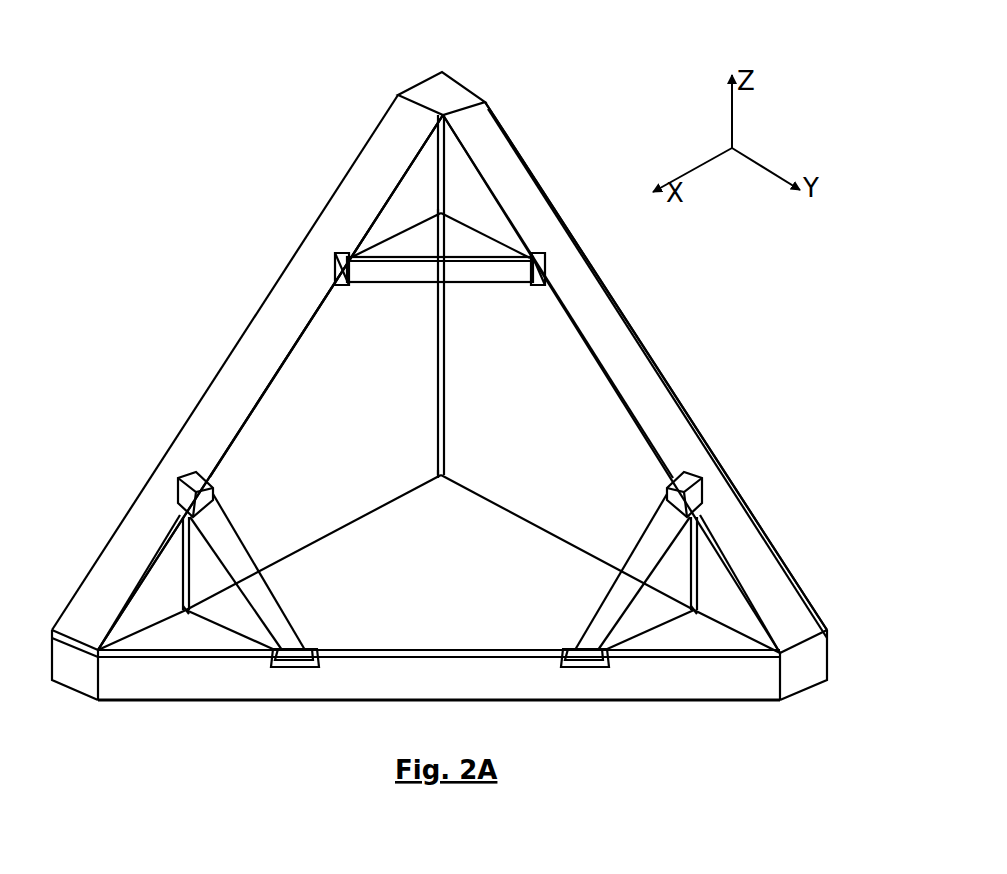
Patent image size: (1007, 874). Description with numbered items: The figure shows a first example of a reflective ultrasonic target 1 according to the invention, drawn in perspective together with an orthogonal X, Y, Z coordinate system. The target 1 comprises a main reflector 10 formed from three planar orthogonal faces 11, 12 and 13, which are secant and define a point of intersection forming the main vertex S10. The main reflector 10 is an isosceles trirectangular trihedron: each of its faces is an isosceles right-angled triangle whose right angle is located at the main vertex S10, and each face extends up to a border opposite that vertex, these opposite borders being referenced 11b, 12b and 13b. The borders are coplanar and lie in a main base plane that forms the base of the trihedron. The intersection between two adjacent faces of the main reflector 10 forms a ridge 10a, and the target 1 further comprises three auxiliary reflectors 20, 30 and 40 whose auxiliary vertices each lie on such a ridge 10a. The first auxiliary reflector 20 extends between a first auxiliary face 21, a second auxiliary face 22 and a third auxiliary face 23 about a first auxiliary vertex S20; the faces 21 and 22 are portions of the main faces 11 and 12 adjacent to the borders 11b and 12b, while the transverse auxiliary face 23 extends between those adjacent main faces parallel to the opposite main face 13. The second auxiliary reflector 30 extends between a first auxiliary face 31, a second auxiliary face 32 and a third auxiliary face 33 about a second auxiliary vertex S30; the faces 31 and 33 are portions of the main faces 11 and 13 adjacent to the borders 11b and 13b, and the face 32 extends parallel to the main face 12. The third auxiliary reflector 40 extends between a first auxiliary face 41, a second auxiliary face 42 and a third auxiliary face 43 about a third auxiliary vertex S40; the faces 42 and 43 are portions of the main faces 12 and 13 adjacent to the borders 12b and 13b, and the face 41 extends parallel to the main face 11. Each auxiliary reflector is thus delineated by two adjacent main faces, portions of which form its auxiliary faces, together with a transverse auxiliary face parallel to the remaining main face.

The reflective ultrasonic target 1 is at (156, 100).
The main reflector 10 is at (285, 202).
The ridge 10a is at (447, 385).
The planar orthogonal face 11 is at (308, 358).
The border 11b is at (252, 392).
The planar orthogonal face 12 is at (613, 378).
The border 12b is at (667, 362).
The planar orthogonal face 13 is at (475, 612).
The border 13b is at (378, 660).
The first auxiliary reflector 20 is at (430, 160).
The first auxiliary face 21 is at (415, 183).
The second auxiliary face 22 is at (467, 183).
The third auxiliary face 23 is at (462, 243).
The second auxiliary reflector 30 is at (153, 640).
The first auxiliary face 31 is at (160, 578).
The second auxiliary face 32 is at (220, 605).
The third auxiliary face 33 is at (193, 635).
The third auxiliary reflector 40 is at (658, 632).
The first auxiliary face 41 is at (677, 568).
The second auxiliary face 42 is at (738, 590).
The third auxiliary face 43 is at (668, 628).
The main vertex S10 is at (437, 470).
The first auxiliary vertex S20 is at (440, 216).
The second auxiliary vertex S30 is at (173, 603).
The third auxiliary vertex S40 is at (697, 618).